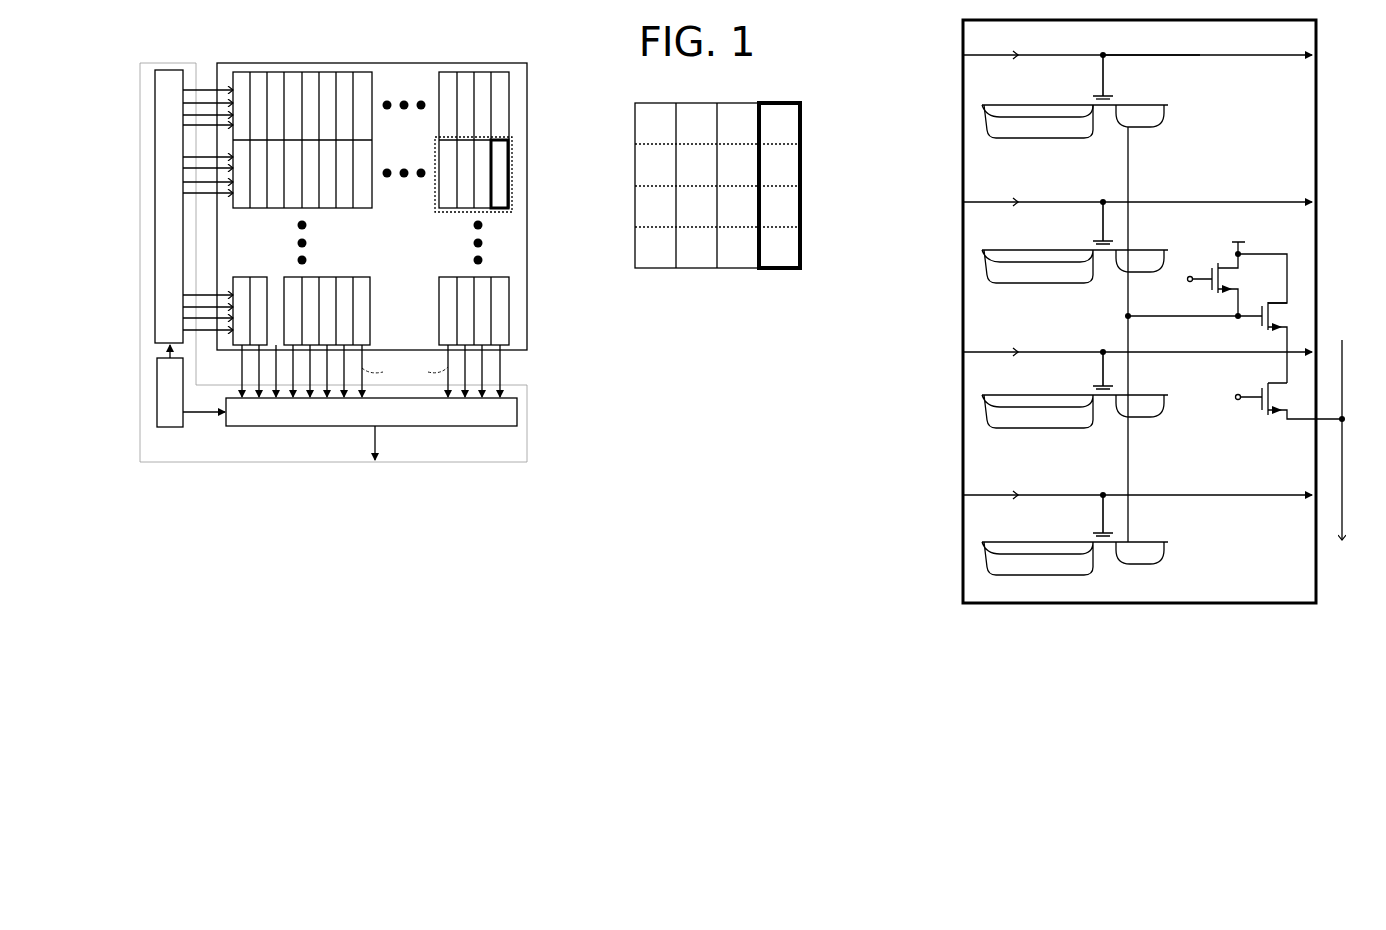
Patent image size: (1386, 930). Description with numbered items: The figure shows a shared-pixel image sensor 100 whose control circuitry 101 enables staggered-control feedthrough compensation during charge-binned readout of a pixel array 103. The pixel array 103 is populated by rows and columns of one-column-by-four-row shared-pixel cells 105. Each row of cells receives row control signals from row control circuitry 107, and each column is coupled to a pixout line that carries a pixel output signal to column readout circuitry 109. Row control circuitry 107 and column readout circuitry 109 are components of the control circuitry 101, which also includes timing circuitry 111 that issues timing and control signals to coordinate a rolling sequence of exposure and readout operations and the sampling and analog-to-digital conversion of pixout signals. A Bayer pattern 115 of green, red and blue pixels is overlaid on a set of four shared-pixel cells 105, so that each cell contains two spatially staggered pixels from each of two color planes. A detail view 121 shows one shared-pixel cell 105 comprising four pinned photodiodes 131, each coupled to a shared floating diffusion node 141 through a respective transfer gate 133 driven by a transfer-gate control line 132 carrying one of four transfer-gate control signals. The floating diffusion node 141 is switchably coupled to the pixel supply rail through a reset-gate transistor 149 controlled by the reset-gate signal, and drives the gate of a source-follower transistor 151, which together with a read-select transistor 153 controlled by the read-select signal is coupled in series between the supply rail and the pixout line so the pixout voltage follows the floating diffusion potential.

The shared-pixel image sensor 100 is at (490, 477).
The control circuitry 101 is at (333, 262).
The pixel array 103 is at (372, 206).
The shared-pixel cell 105 is at (508, 208).
The row control circuitry 107 is at (194, 206).
The column readout circuitry 109 is at (371, 402).
The timing circuitry 111 is at (190, 376).
The Bayer pattern 115 is at (509, 144).
The detail view 121 is at (801, 172).
The pinned photodiode 131 is at (1030, 141).
The transfer-gate control line 132 is at (1168, 53).
The transfer gate 133 is at (1095, 92).
The shared floating diffusion node 141 is at (1220, 143).
The reset-gate transistor 149 is at (1219, 285).
The source-follower transistor 151 is at (1281, 342).
The read-select transistor 153 is at (1286, 401).